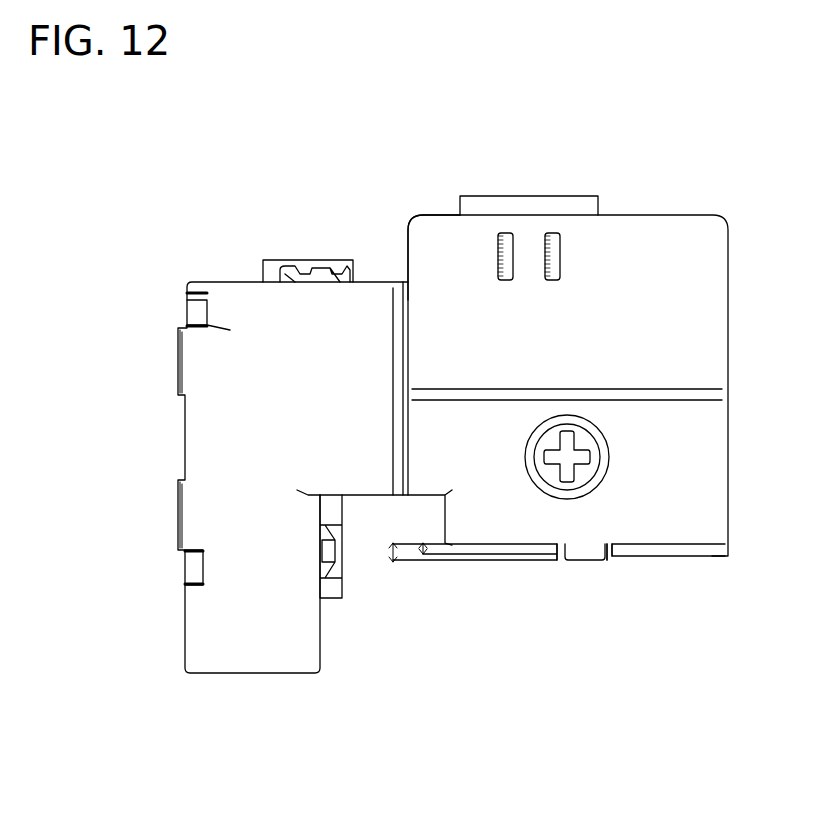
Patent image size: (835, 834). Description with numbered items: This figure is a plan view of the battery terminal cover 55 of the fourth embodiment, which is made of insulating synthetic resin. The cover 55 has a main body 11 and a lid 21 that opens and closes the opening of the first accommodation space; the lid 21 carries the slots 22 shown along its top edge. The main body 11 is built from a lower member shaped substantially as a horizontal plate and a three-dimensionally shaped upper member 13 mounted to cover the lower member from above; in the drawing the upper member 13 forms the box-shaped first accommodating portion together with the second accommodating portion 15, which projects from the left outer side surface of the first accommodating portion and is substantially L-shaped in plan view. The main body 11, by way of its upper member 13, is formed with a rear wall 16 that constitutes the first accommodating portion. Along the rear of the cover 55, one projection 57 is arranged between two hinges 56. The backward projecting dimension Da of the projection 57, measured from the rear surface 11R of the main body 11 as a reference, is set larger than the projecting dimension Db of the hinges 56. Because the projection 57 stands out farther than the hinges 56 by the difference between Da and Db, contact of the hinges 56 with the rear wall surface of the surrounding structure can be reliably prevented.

The main body 11 is at (719, 218).
The rear surface 11R is at (560, 548).
The upper member 13 is at (250, 655).
The second accommodating portion 15 is at (290, 705).
The rear wall 16 is at (608, 543).
The lid 21 is at (413, 220).
The slot 22 is at (478, 262).
The cover 55 is at (645, 176).
The hinges 56 is at (493, 553).
The projection 57 is at (585, 553).
The backward projecting dimension Da is at (393, 553).
The projecting dimension Db is at (423, 553).